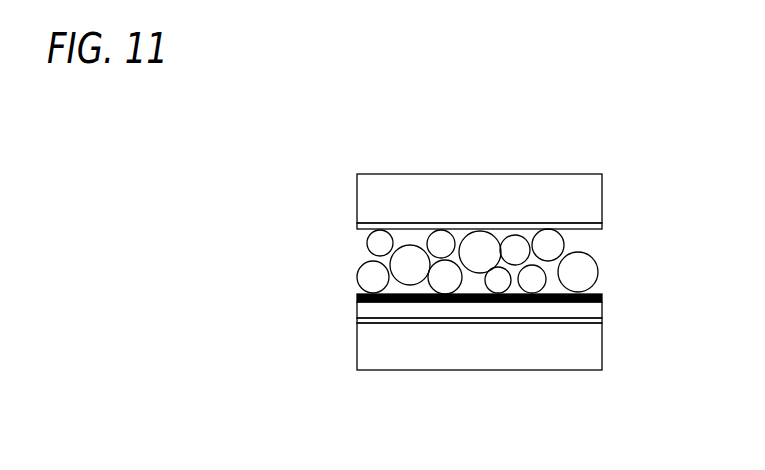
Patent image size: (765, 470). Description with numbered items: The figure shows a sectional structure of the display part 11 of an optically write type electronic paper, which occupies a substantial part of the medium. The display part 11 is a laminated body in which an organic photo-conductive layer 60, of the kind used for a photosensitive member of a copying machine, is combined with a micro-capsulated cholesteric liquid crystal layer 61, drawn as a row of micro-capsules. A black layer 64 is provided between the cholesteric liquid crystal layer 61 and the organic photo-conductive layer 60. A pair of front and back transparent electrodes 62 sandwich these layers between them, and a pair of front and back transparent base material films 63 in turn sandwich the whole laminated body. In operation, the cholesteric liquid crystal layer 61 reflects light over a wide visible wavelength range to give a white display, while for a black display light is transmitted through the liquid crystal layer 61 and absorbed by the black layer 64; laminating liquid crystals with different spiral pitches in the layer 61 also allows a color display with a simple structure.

The display part 11 is at (542, 174).
The organic photo-conductive layer 60 is at (507, 306).
The micro-capsulated cholesteric liquid crystal layer 61 is at (470, 252).
The transparent electrodes 62 is at (563, 226).
The transparent base material films 63 is at (517, 193).
The black layer 64 is at (600, 294).